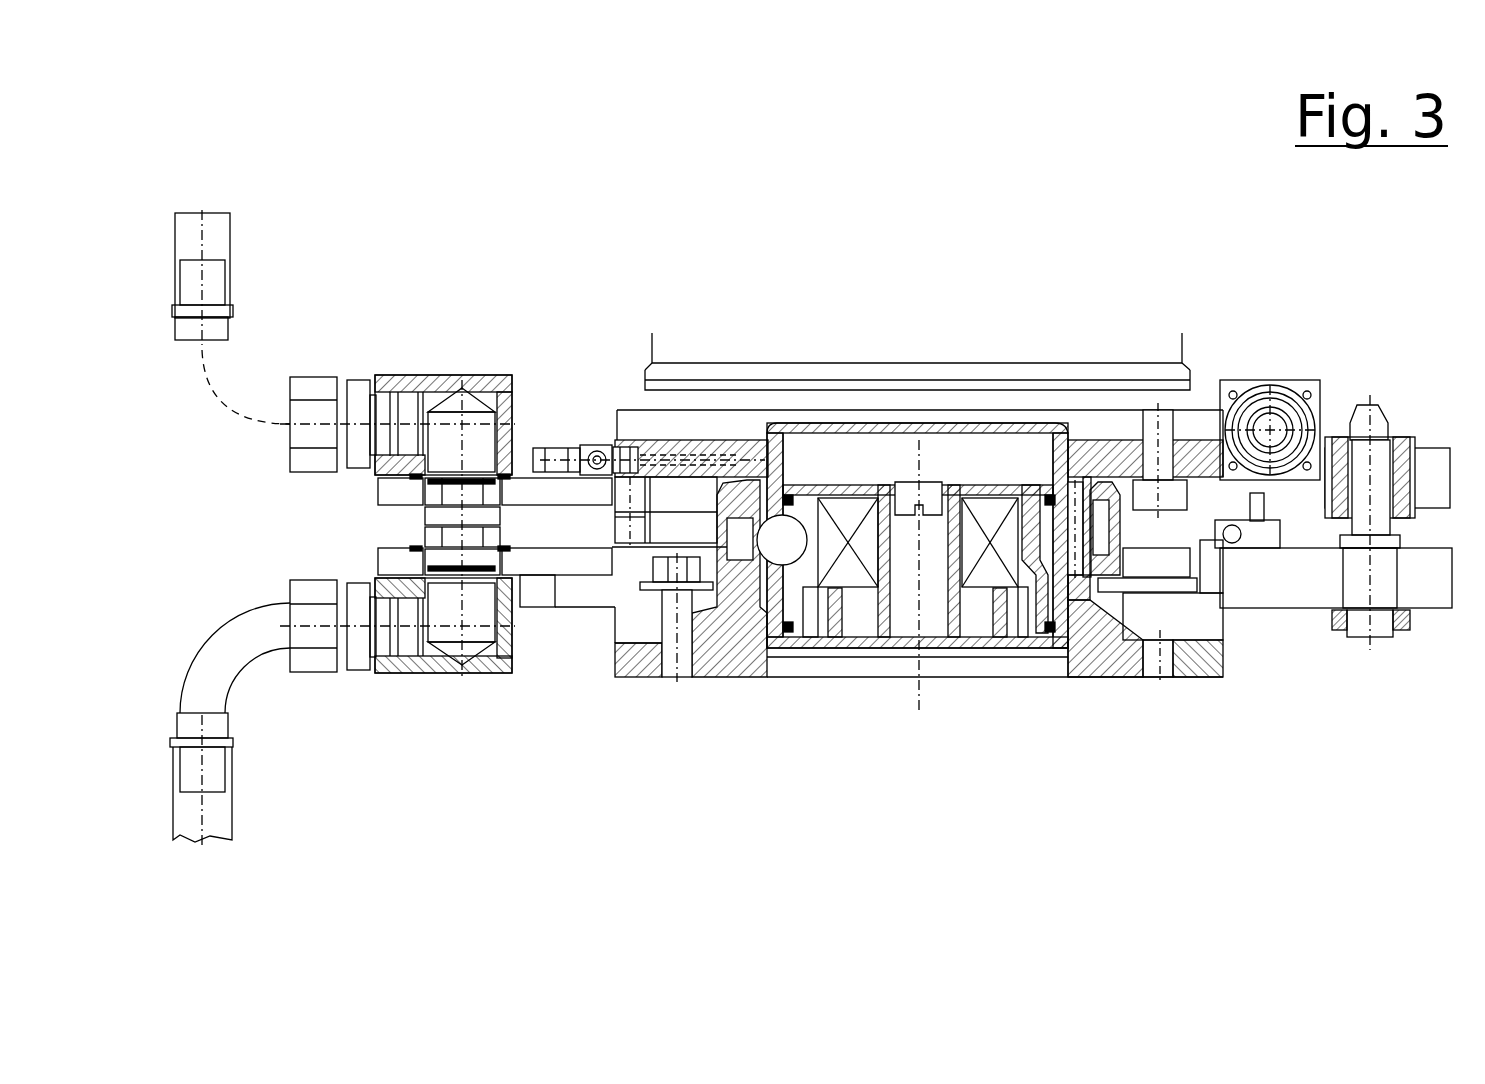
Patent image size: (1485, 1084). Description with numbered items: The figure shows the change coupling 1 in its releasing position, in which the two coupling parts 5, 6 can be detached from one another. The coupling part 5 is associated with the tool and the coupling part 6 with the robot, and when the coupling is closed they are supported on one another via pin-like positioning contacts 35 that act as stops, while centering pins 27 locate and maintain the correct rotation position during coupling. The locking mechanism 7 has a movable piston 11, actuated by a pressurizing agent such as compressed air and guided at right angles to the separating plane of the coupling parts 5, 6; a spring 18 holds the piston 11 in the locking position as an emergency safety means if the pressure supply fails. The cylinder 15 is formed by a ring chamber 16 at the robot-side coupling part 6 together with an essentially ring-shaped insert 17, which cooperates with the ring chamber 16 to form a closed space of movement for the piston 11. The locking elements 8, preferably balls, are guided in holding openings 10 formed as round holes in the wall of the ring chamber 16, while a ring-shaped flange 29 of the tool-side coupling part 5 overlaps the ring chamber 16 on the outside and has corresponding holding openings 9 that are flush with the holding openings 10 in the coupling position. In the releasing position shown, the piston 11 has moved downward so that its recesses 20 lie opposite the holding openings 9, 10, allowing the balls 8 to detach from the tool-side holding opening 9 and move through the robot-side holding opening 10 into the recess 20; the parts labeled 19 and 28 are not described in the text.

The change coupling 1 is at (392, 293).
The coupling part 5 is at (1433, 580).
The coupling part 6 is at (1437, 472).
The locking mechanism 7 is at (648, 690).
The locking elements 8 is at (700, 605).
The holding openings 9 is at (740, 540).
The holding openings 10 is at (1067, 517).
The piston 11 is at (885, 583).
The cylinder 15 is at (873, 430).
The ring chamber 16 is at (965, 457).
The insert 17 is at (1000, 640).
The spring 18 is at (852, 570).
The adjusting screw 19 is at (620, 452).
The recesses 20 is at (1037, 532).
The centering pins 27 is at (1363, 418).
The pipe connection fitting 28 is at (438, 390).
The flange 29 is at (1110, 517).
The positioning contacts 35 is at (637, 532).